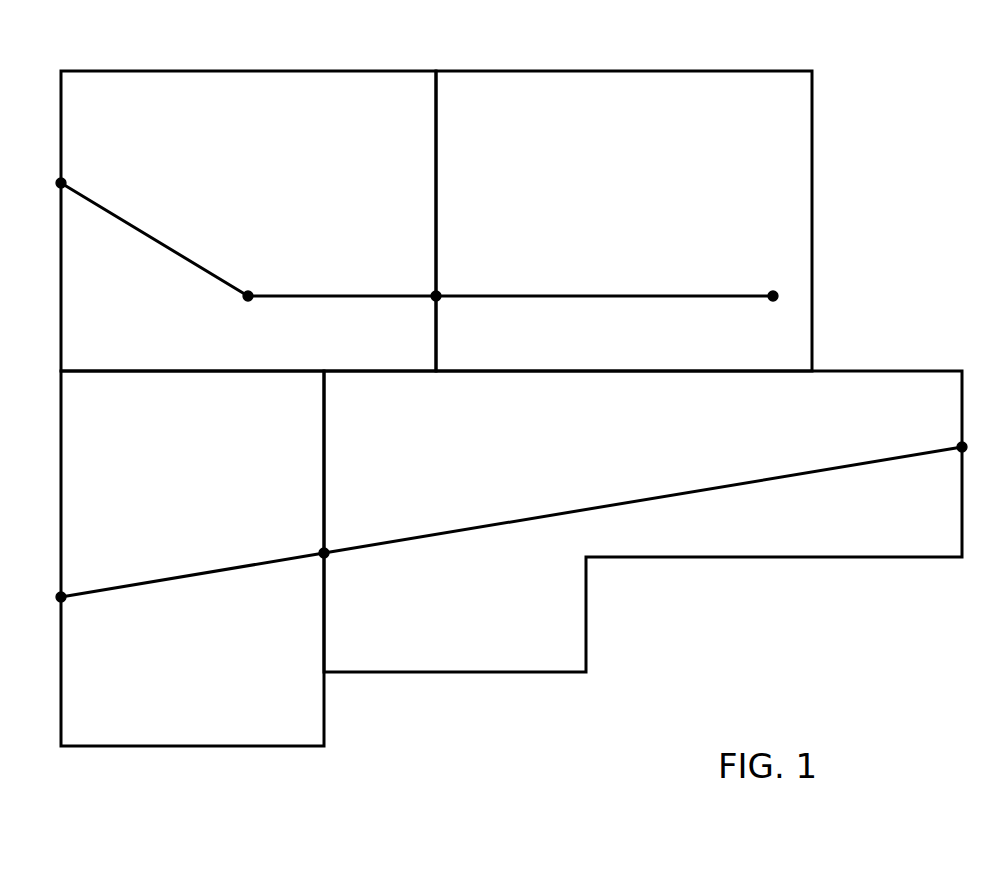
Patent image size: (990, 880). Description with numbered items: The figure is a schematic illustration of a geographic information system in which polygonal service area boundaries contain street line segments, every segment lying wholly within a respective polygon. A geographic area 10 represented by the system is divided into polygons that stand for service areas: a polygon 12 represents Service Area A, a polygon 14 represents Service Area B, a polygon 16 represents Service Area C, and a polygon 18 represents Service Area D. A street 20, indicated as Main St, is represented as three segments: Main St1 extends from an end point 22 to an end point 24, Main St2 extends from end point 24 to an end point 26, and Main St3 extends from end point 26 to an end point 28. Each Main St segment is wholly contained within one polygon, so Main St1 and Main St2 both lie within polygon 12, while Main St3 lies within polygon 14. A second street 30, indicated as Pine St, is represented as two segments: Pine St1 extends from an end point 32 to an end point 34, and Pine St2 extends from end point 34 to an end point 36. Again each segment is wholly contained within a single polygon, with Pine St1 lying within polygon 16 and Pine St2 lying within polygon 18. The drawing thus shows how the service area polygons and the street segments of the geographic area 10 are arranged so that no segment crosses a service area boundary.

The geographic area 10 is at (365, 820).
The polygon 12 is at (347, 71).
The polygon 14 is at (652, 71).
The polygon 16 is at (140, 746).
The polygon 18 is at (586, 607).
The street 20 is at (648, 252).
The end point 22 is at (64, 180).
The end point 24 is at (252, 300).
The end point 26 is at (440, 292).
The end point 28 is at (768, 302).
The street 30 is at (685, 466).
The end point 32 is at (66, 601).
The end point 34 is at (328, 557).
The end point 36 is at (958, 443).